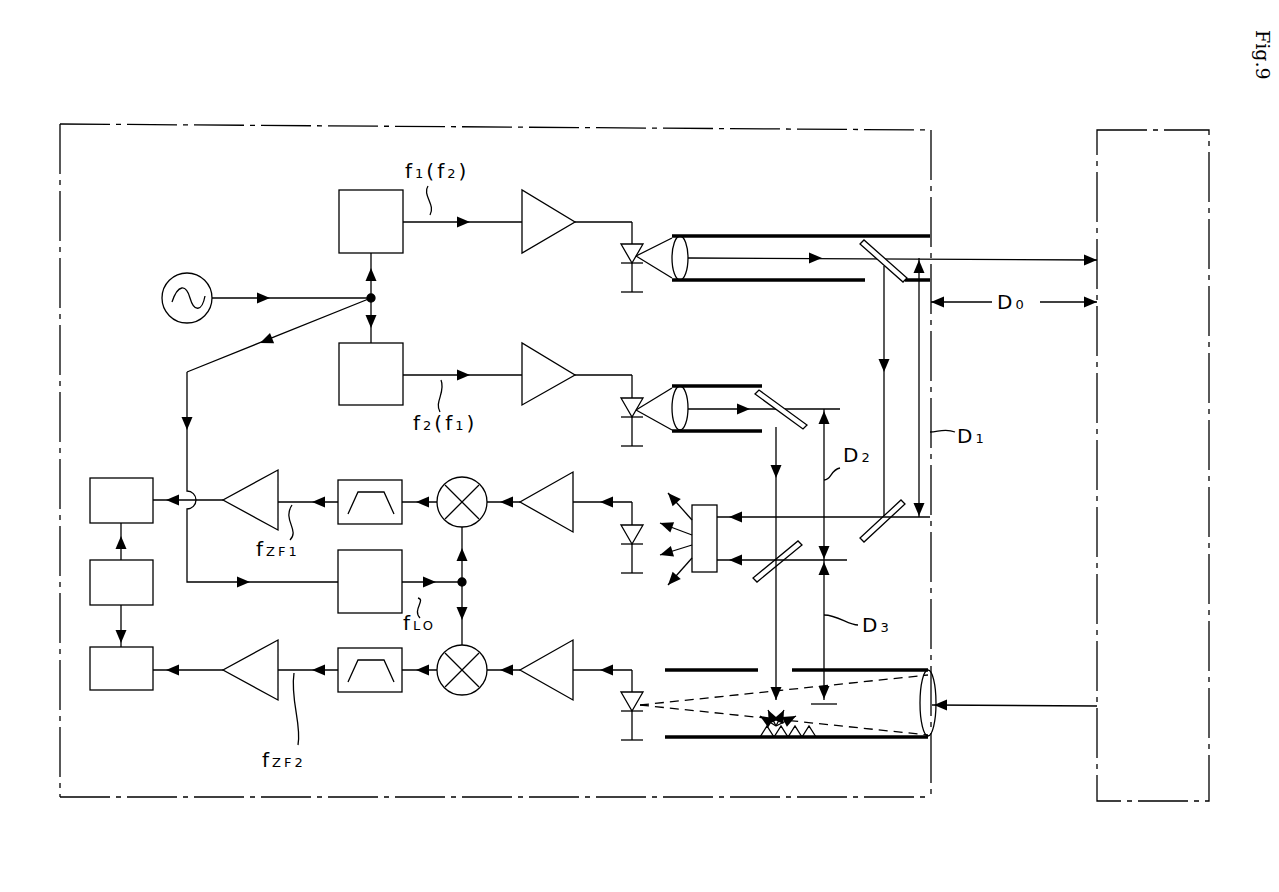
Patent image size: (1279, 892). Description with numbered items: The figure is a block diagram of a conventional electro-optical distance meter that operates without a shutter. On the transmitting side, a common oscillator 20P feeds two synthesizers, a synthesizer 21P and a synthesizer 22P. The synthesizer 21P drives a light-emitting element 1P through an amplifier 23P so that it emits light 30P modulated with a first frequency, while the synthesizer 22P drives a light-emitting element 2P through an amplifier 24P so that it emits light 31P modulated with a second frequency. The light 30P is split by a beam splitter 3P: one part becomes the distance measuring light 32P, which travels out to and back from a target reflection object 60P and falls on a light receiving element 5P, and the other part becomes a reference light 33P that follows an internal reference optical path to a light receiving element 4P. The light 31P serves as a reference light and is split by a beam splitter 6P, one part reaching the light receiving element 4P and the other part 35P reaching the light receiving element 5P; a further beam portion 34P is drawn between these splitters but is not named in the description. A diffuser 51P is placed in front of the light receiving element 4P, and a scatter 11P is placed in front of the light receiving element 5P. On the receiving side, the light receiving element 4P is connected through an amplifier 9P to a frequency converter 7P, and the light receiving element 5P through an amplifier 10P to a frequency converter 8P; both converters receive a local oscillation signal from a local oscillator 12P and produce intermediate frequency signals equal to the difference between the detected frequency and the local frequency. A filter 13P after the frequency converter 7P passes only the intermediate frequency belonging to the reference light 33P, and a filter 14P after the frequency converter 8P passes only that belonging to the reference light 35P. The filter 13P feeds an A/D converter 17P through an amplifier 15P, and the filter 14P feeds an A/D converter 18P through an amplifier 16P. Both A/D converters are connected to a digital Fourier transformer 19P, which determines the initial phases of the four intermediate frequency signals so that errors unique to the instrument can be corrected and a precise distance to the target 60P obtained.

The light-emitting element 1P is at (625, 272).
The light-emitting element 2P is at (627, 420).
The beam splitter 3P is at (877, 240).
The light receiving element 4P is at (622, 552).
The light receiving element 5P is at (622, 720).
The beam splitter 6P is at (784, 566).
The frequency converter 7P is at (478, 522).
The frequency converter 8P is at (455, 695).
The amplifier 9P is at (558, 528).
The amplifier 10P is at (545, 688).
The scatter 11P is at (818, 738).
The local oscillator 12P is at (338, 600).
The filter 13P is at (365, 480).
The filter 14P is at (370, 693).
The amplifier 15P is at (250, 482).
The amplifier 16P is at (250, 690).
The A/D converter 17P is at (120, 478).
The A/D converter 18P is at (120, 692).
The digital Fourier transformer 19P is at (123, 622).
The oscillator 20P is at (166, 310).
The synthesizer 21P is at (403, 252).
The synthesizer 22P is at (339, 390).
The amplifier 23P is at (545, 246).
The amplifier 24P is at (548, 395).
The light 30P is at (725, 282).
The light 31P is at (706, 386).
The distance measuring light 32P is at (992, 258).
The reference light 33P is at (884, 327).
The internal reference beam 34P is at (745, 564).
The reference light 35P is at (776, 640).
The diffuser 51P is at (706, 505).
The target reflection object 60P is at (1097, 535).